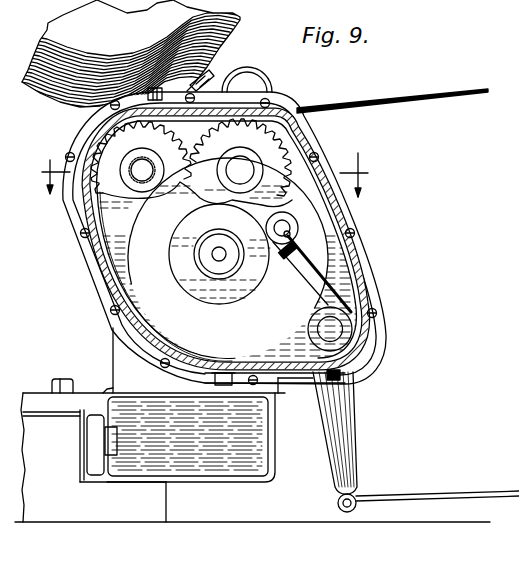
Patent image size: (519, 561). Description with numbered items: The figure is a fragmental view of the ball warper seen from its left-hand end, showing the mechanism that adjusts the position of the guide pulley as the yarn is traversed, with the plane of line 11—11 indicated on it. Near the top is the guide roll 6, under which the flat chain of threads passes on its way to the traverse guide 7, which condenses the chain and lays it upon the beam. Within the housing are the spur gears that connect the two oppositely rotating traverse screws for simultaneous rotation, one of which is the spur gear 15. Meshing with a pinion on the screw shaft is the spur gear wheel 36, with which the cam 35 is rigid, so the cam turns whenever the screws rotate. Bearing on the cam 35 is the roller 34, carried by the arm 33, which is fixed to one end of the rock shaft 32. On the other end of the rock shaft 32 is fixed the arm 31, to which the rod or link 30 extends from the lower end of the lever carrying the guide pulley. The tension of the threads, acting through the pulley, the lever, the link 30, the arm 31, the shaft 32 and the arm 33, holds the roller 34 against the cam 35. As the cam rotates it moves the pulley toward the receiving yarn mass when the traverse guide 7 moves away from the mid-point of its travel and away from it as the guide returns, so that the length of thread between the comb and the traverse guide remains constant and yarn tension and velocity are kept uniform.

The guide roll 6 is at (258, 70).
The traverse guide 7 is at (208, 82).
The section line 11— 11 is at (211, 175).
The spur gear 15 is at (125, 148).
The rod or link 30 is at (475, 496).
The arm 31 is at (347, 435).
The rock shaft 32 is at (335, 326).
The arm 33 is at (310, 280).
The roller 34 is at (300, 222).
The cam 35 is at (182, 265).
The spur gear wheel 36 is at (123, 258).